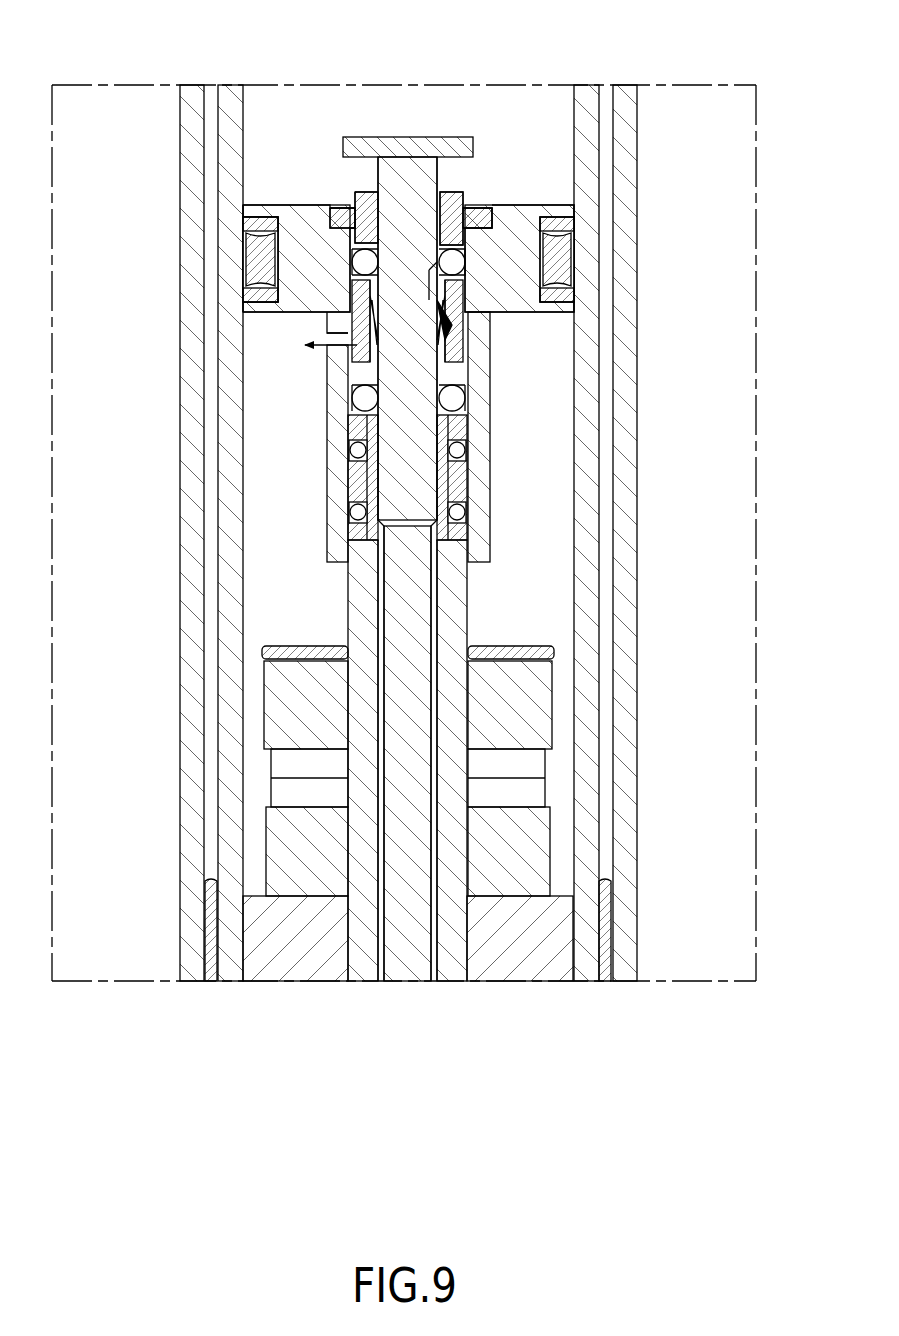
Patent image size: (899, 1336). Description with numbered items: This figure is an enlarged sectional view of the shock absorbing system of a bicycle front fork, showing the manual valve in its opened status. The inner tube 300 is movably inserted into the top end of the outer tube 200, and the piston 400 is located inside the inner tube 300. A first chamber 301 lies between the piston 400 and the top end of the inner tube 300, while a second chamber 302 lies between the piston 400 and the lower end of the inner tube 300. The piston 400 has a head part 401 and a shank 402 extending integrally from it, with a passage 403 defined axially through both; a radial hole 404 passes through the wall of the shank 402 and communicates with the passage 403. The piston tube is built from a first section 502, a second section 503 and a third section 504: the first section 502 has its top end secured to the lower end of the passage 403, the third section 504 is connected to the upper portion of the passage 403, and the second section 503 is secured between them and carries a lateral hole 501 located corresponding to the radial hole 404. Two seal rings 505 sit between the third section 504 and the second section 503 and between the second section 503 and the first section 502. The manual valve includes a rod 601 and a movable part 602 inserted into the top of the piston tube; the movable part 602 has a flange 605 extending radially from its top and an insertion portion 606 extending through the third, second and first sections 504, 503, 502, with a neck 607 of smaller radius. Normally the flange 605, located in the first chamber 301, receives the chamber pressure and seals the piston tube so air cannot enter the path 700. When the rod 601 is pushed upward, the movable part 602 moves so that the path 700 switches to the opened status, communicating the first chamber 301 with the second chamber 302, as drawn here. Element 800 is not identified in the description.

The outer tube 200 is at (625, 763).
The inner tube 300 is at (590, 680).
The first chamber 301 is at (550, 115).
The second chamber 302 is at (540, 455).
The piston 400 is at (273, 203).
The head part 401 is at (303, 210).
The shank 402 is at (330, 433).
The passage 403 is at (357, 480).
The radial hole 404 is at (357, 338).
The lateral hole 501 is at (445, 325).
The first section 502 is at (363, 968).
The second section 503 is at (452, 353).
The third section 504 is at (460, 205).
The seal ring 505 is at (452, 263).
The rod 601 is at (407, 970).
The movable part 602 is at (422, 135).
The flange 605 is at (358, 137).
The insertion portion 606 is at (427, 490).
The neck 607 is at (430, 292).
The path 700 is at (357, 323).
The lower bearing 800 is at (463, 472).